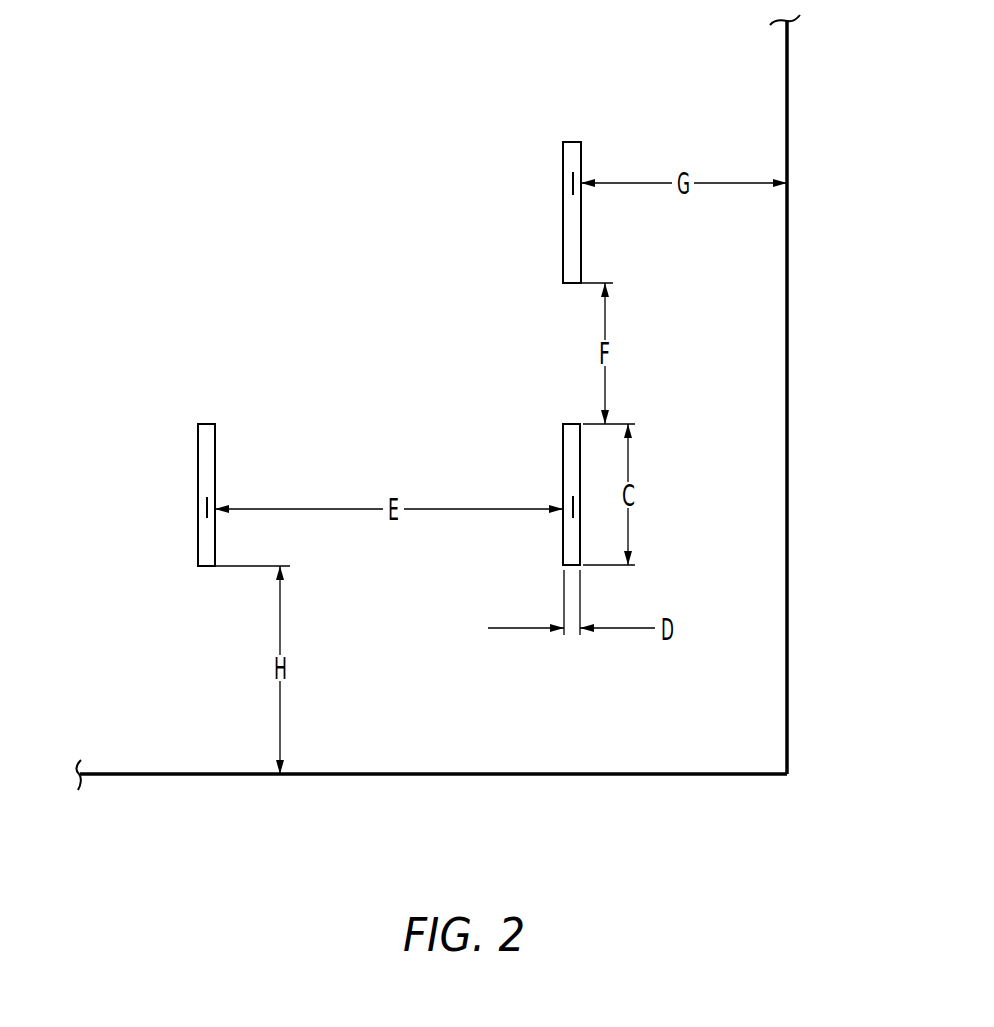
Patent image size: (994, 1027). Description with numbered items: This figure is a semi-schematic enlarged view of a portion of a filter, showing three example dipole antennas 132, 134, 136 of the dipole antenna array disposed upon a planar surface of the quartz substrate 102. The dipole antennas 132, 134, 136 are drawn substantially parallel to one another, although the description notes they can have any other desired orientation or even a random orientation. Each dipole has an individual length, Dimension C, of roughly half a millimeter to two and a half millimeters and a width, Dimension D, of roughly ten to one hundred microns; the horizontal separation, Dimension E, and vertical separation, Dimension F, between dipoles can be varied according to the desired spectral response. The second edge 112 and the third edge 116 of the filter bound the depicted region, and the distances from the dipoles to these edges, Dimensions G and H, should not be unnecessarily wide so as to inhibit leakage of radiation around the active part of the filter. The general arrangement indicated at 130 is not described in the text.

The quartz substrate 102 is at (420, 345).
The second edge 112 is at (788, 712).
The third edge 116 is at (690, 776).
The assembly 130 is at (176, 836).
The dipole antenna 132 is at (563, 258).
The dipole antenna 134 is at (563, 457).
The dipole antenna 136 is at (198, 452).